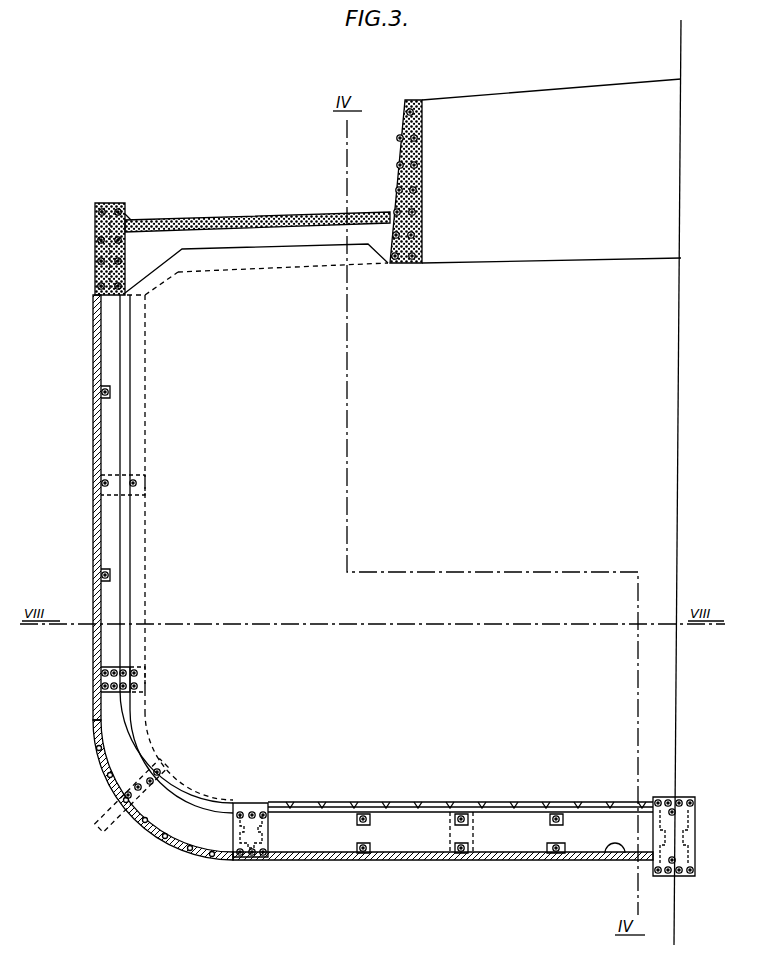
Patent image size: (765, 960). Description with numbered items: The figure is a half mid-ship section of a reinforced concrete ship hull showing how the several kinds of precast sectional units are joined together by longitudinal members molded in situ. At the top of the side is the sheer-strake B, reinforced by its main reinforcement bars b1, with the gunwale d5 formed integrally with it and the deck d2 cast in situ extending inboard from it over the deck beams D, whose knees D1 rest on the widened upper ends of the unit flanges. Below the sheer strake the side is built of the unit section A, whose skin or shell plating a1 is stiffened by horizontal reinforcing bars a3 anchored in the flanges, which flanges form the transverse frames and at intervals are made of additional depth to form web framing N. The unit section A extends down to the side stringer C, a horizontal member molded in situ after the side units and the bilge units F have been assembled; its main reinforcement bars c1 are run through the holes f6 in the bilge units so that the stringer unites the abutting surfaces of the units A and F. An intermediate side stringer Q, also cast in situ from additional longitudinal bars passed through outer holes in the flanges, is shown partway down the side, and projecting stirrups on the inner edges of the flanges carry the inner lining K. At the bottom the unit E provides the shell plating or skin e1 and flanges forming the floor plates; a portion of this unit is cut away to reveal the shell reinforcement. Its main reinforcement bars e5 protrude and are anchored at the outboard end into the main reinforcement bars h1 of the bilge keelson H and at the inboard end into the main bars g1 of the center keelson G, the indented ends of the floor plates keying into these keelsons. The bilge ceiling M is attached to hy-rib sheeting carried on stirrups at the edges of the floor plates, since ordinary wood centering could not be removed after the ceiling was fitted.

The sheer-strake B is at (95, 228).
The main reinforcement bars of the sheer strake b1 is at (118, 208).
The deck d2 is at (237, 220).
The gunwale d5 is at (127, 216).
The deck beams D is at (297, 242).
The knees of the deck beams D1 is at (140, 272).
The web framing N is at (327, 266).
The skin or shell plating a1 is at (95, 342).
The unit section A is at (108, 422).
The intermediate side stringer Q is at (136, 484).
The inner lining K is at (145, 536).
The side stringer C is at (108, 670).
The main reinforcement bars of the side stringer c1 is at (98, 685).
The horizontal reinforcing bars of the shell a3 is at (95, 655).
The bilge units F is at (142, 752).
The holes in the bilge units f6 is at (120, 798).
The shell plating or skin e1 is at (411, 860).
The bilge keelson H is at (262, 805).
The main reinforcement bars of the bilge keelson h1 is at (252, 811).
The bilge ceiling M is at (406, 802).
The unit forming the bottom shell plating and floor plates E is at (432, 832).
The main reinforcement bars of unit E e5 is at (598, 813).
The center keelson G is at (690, 840).
The main bars of the center keelson g1 is at (690, 800).